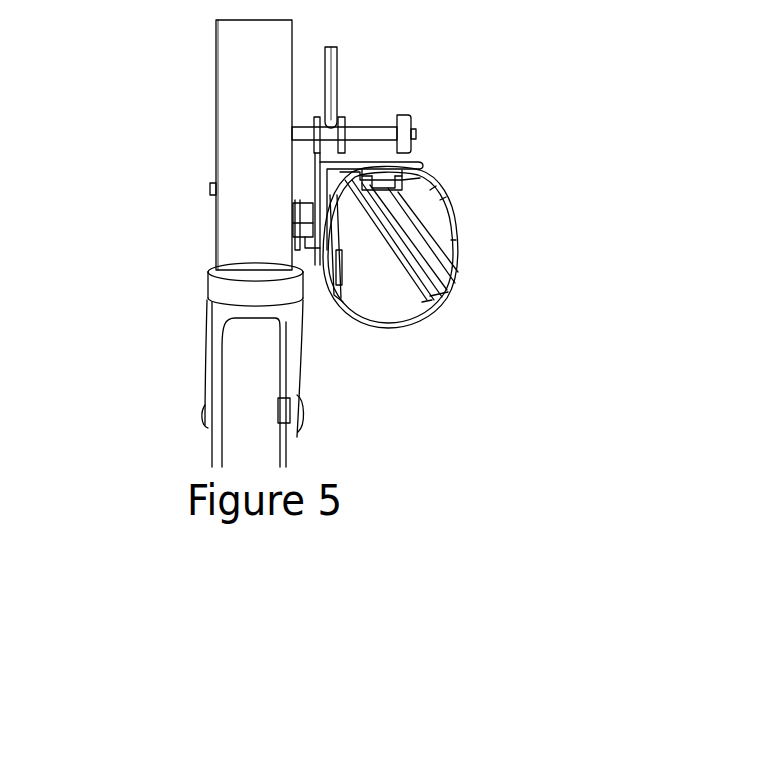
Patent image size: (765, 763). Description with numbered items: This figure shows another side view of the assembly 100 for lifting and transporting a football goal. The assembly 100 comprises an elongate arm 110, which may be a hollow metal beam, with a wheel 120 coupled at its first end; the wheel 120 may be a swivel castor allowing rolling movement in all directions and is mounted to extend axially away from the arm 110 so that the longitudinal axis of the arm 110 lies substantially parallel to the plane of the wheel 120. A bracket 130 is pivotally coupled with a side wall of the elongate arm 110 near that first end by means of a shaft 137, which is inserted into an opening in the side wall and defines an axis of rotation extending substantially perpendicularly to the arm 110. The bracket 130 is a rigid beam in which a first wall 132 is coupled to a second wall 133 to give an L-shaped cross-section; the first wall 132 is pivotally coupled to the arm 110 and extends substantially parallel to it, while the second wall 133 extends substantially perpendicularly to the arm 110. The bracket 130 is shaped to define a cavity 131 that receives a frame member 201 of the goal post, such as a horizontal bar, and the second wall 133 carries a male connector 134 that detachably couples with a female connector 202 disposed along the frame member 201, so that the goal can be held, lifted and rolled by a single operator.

The assembly 100 is at (348, 238).
The elongate arm 110 is at (207, 238).
The wheel 120 is at (190, 375).
The bracket 130 is at (360, 87).
The cavity 131 is at (402, 185).
The first wall 132 is at (320, 191).
The second wall 133 is at (407, 165).
The male connector 134 is at (386, 177).
The shaft 137 is at (305, 240).
The frame member 201 is at (455, 243).
The female connector 202 is at (327, 172).